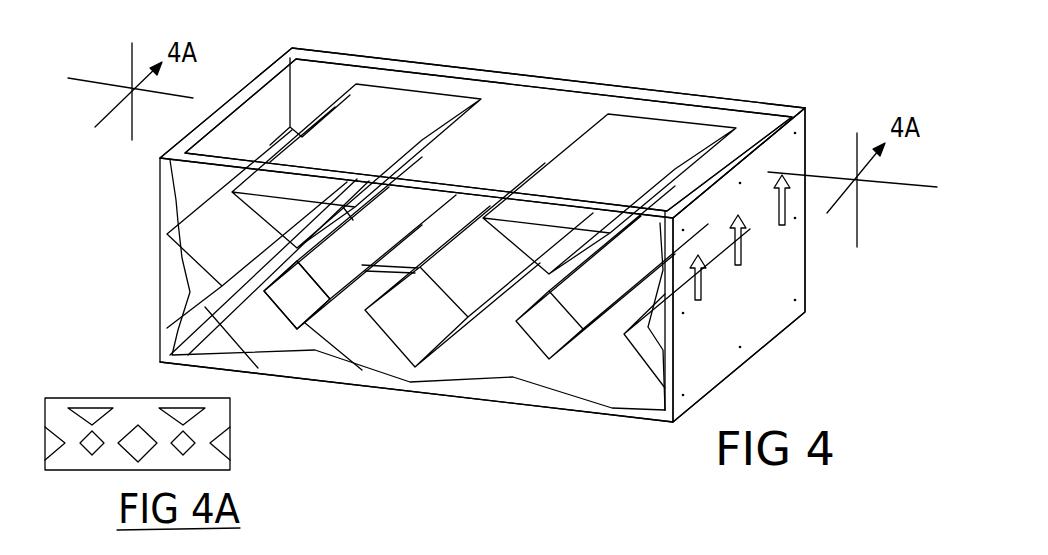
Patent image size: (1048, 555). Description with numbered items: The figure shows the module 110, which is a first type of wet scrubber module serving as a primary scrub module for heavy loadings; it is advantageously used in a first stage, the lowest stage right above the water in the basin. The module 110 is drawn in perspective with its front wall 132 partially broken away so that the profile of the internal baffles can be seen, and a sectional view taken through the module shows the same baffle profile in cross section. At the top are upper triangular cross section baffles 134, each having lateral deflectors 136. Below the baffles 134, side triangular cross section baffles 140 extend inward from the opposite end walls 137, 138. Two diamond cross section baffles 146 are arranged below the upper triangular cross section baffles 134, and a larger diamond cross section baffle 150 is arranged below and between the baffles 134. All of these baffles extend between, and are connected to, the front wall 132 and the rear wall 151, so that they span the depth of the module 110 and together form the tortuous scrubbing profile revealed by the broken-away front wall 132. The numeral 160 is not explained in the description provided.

In FIG. 4, the module 110 is at (333, 392).
In FIG. 4, the front wall 132 is at (665, 352).
In FIG. 4, the upper triangular cross section baffles 134 is at (662, 134).
In FIG. 4A, the upper triangular cross section baffles 134 is at (183, 398).
In FIG. 4, the lateral deflectors 136 is at (335, 113).
In FIG. 4, the end wall 137 is at (265, 110).
In FIG. 4, the end wall 138 is at (795, 290).
In FIG. 4, the side triangular cross section baffles 140 is at (258, 368).
In FIG. 4A, the side triangular cross section baffles 140 is at (58, 458).
In FIG. 4, the diamond cross section baffles 146 is at (327, 315).
In FIG. 4A, the diamond cross section baffles 146 is at (190, 453).
In FIG. 4, the larger diamond cross section baffle 150 is at (393, 340).
In FIG. 4A, the larger diamond cross section baffle 150 is at (128, 452).
In FIG. 4, the rear wall 151 is at (440, 80).
In FIG. 4, the bottom panel 160 is at (416, 458).